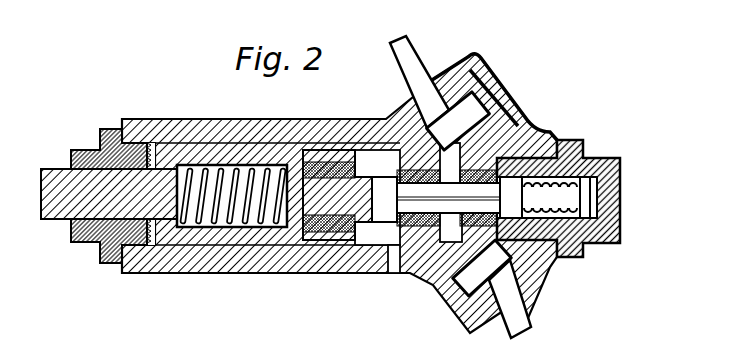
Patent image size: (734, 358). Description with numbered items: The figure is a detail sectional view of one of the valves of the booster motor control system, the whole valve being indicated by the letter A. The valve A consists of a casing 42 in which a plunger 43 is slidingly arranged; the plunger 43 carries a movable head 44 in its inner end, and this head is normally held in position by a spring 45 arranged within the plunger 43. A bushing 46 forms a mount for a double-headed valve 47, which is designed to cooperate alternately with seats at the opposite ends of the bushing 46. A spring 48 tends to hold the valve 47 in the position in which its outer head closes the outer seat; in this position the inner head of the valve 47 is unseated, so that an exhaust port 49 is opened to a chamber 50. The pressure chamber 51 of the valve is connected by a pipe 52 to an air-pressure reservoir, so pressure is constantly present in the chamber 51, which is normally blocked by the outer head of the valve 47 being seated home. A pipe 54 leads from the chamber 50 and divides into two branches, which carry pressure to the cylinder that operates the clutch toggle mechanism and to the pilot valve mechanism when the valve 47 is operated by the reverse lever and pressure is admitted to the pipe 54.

The casing 42 is at (273, 263).
The plunger 43 is at (58, 218).
The movable head 44 is at (343, 200).
The spring 45 is at (215, 217).
The bushing 46 is at (522, 118).
The double-headed valve 47 is at (430, 207).
The spring 48 is at (570, 180).
The exhaust port 49 is at (391, 272).
The chamber 50 is at (458, 121).
The pressure chamber 51 is at (482, 268).
The pipe 52 is at (531, 318).
The pipe 54 is at (412, 58).
The valve A is at (303, 118).